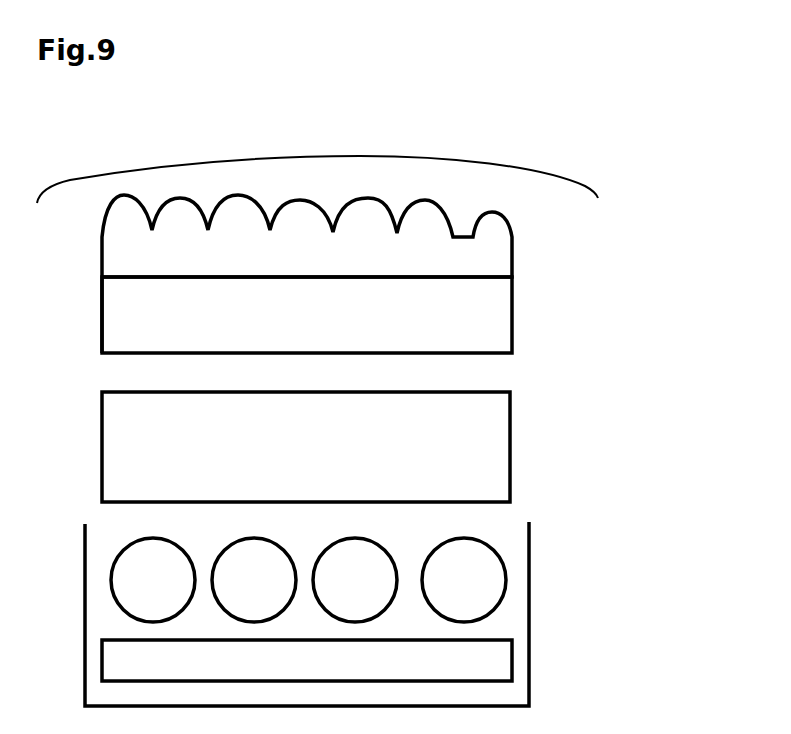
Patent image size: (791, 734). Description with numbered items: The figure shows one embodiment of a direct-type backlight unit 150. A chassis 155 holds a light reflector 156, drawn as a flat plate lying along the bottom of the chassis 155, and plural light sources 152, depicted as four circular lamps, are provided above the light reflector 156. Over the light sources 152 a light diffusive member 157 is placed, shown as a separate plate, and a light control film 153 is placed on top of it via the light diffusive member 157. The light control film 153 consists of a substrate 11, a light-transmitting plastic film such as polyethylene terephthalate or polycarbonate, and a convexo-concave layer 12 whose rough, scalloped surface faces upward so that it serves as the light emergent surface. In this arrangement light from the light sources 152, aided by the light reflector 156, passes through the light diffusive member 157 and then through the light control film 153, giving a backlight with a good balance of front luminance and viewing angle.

The backlight unit 150 is at (317, 142).
The light control film 153 is at (441, 281).
The convexo-concave layer 12 is at (512, 256).
The substrate 11 is at (512, 328).
The light diffusive member 157 is at (510, 441).
The chassis 155 is at (529, 605).
The light sources 152 is at (505, 573).
The light reflector 156 is at (512, 659).